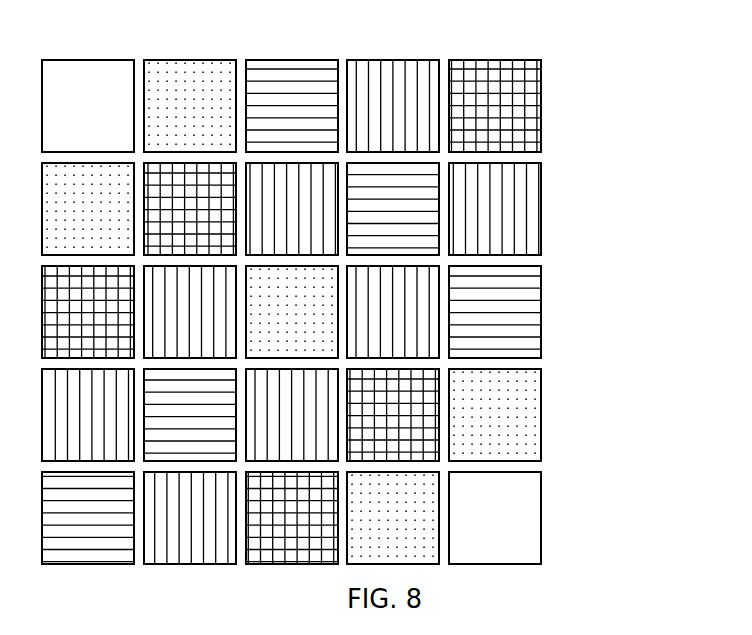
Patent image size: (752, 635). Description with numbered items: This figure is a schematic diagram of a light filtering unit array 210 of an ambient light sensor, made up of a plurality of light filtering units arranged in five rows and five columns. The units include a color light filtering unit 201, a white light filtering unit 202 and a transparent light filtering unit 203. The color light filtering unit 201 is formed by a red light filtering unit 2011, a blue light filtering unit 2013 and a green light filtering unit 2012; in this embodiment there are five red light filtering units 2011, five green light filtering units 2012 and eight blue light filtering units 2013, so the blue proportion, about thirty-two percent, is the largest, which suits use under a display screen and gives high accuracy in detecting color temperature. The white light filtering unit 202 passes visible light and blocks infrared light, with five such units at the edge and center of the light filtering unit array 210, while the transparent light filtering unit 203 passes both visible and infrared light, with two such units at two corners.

The light filtering unit array 210 is at (83, 30).
The color light filtering unit 201 is at (589, 209).
The red light filtering unit 2011 is at (527, 108).
The blue light filtering unit 2013 is at (527, 208).
The green light filtering unit 2012 is at (527, 309).
The white light filtering unit 202 is at (528, 416).
The transparent light filtering unit 203 is at (517, 530).